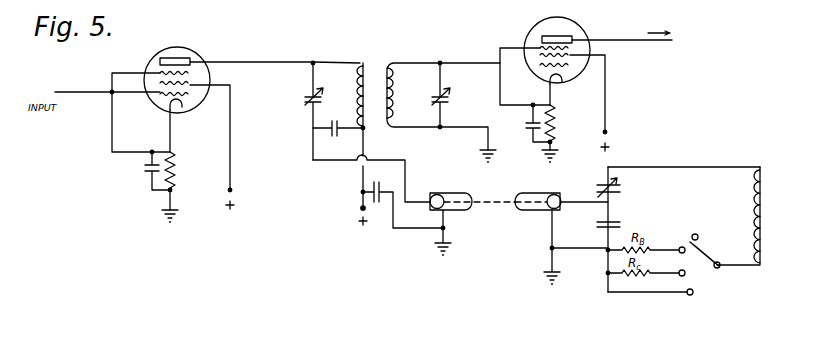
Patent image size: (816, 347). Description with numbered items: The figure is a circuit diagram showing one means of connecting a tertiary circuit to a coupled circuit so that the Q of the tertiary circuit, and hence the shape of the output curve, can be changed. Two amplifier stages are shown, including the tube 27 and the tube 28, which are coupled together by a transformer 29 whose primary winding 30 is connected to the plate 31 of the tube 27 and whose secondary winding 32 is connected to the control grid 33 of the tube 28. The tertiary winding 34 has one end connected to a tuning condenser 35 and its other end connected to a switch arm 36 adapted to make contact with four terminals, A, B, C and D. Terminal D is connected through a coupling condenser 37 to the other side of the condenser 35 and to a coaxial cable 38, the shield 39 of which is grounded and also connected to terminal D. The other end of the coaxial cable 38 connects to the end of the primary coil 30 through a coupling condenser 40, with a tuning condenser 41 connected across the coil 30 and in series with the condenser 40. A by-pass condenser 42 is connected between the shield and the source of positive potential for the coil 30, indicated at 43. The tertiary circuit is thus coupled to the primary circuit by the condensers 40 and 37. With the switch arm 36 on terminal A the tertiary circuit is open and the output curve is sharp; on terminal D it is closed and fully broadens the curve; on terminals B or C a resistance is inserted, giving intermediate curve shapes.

The tube 27 is at (182, 47).
The plate 31 is at (198, 54).
The primary winding 30 is at (352, 78).
The transformer 29 is at (412, 94).
The secondary winding 32 is at (400, 80).
The tuning condenser 41 is at (305, 98).
The coupling condenser 40 is at (327, 134).
The source of positive potential 43 is at (358, 205).
The by-pass condenser 42 is at (378, 208).
The coaxial cable 38 is at (505, 189).
The shield 39 is at (533, 209).
The tube 28 is at (577, 26).
The control grid 33 is at (543, 65).
The tertiary winding 34 is at (747, 203).
The tuning condenser 35 is at (628, 185).
The coupling condenser 37 is at (612, 217).
The switch arm 36 is at (719, 268).